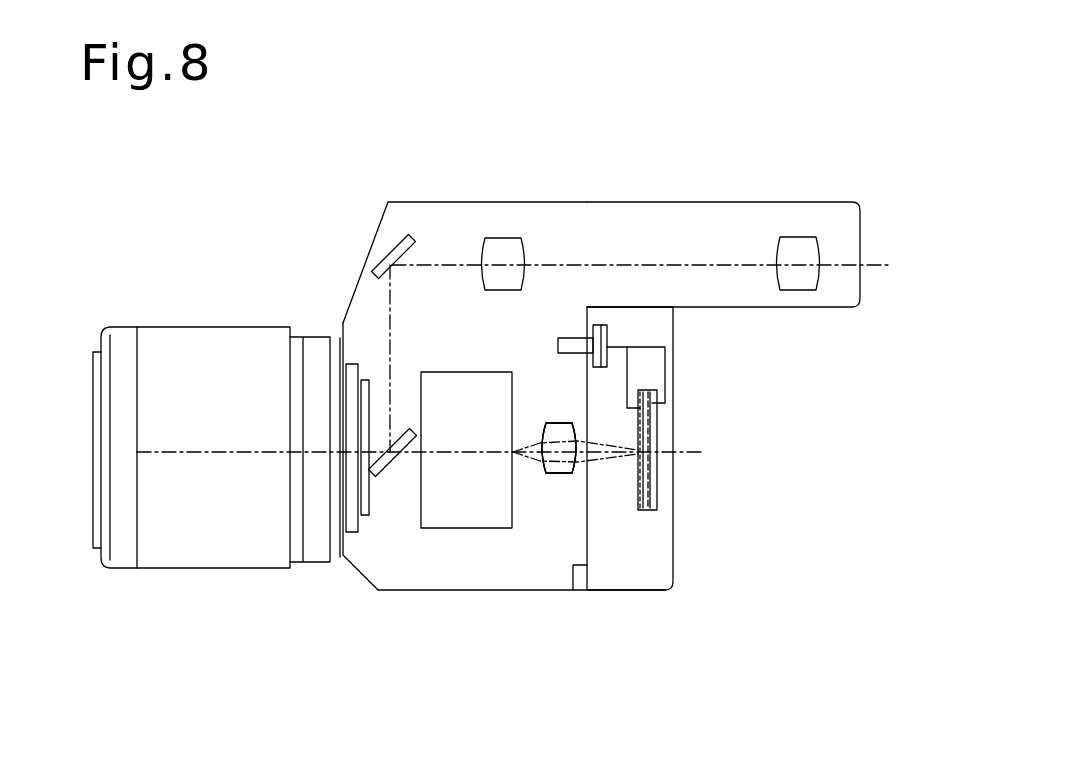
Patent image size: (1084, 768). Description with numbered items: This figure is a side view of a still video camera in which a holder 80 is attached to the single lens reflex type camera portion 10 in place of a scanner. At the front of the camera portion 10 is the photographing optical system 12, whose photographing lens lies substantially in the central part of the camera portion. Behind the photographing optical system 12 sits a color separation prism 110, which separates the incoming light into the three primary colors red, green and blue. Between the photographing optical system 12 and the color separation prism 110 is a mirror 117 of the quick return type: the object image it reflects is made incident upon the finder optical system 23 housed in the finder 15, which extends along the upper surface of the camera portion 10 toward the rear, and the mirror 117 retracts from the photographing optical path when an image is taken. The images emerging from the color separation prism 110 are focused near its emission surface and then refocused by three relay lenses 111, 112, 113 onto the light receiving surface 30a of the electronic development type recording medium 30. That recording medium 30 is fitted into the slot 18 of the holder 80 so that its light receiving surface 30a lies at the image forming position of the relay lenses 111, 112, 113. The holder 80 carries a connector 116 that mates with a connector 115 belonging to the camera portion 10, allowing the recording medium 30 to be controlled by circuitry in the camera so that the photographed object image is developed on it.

The camera portion 10 is at (413, 590).
The photographing optical system 12 is at (180, 552).
The finder 15 is at (770, 187).
The slot 18 is at (657, 427).
The finder optical system 23 is at (778, 250).
The electronic development type recording medium 30 is at (652, 496).
The light receiving surface 30a is at (652, 473).
The holder 80 is at (637, 590).
The color separation prism 110 is at (473, 518).
The relay lens 111 is at (558, 473).
The relay lens 112 is at (560, 549).
The relay lens 113 is at (559, 448).
The connector 115 is at (563, 343).
The connector 116 is at (605, 335).
The mirror 117 is at (385, 472).